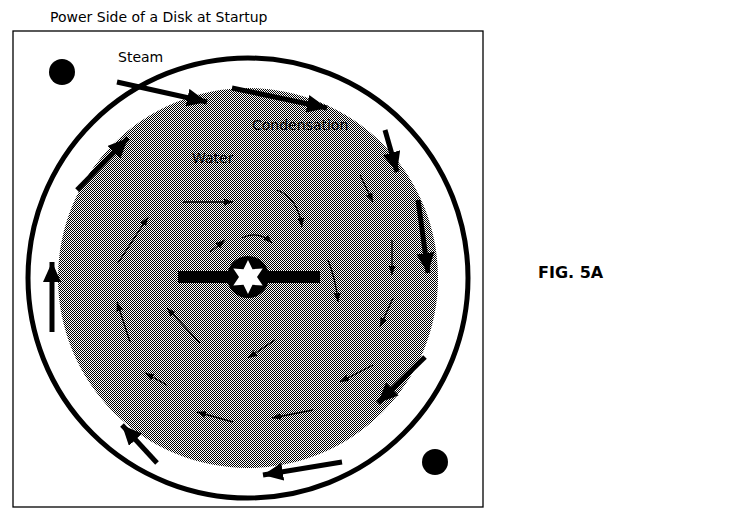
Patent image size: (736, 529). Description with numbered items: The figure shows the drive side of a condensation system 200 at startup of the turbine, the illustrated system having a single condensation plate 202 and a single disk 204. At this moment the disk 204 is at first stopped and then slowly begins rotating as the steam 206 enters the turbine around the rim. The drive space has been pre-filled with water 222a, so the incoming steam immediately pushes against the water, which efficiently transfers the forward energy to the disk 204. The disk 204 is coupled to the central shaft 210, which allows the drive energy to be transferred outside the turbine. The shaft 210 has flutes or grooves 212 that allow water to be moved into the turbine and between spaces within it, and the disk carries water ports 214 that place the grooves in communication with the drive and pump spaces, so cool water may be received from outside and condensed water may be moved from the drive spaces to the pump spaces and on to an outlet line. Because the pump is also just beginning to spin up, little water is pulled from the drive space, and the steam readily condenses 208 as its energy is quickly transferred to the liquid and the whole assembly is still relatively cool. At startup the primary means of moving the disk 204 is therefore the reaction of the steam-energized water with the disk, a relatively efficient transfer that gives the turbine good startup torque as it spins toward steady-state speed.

The condensation system 200 is at (648, 63).
The condensation plate 202 is at (485, 109).
The disk 204 is at (417, 175).
The steam 206 is at (117, 80).
The condensation 208 is at (360, 138).
The shaft 210 is at (250, 280).
The flutes or grooves 212 is at (238, 296).
The water ports 214 is at (206, 270).
The water 222a is at (432, 318).